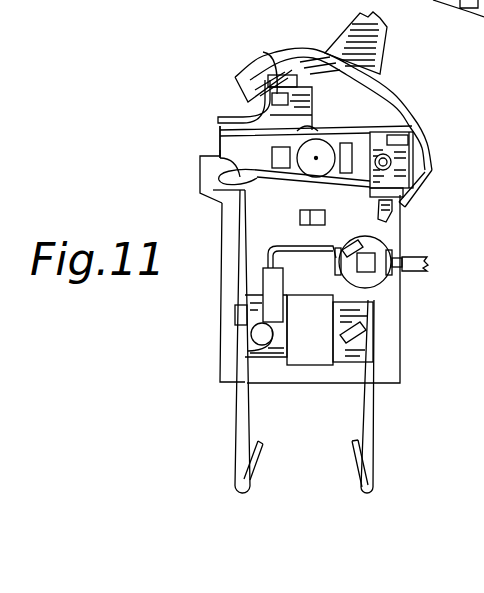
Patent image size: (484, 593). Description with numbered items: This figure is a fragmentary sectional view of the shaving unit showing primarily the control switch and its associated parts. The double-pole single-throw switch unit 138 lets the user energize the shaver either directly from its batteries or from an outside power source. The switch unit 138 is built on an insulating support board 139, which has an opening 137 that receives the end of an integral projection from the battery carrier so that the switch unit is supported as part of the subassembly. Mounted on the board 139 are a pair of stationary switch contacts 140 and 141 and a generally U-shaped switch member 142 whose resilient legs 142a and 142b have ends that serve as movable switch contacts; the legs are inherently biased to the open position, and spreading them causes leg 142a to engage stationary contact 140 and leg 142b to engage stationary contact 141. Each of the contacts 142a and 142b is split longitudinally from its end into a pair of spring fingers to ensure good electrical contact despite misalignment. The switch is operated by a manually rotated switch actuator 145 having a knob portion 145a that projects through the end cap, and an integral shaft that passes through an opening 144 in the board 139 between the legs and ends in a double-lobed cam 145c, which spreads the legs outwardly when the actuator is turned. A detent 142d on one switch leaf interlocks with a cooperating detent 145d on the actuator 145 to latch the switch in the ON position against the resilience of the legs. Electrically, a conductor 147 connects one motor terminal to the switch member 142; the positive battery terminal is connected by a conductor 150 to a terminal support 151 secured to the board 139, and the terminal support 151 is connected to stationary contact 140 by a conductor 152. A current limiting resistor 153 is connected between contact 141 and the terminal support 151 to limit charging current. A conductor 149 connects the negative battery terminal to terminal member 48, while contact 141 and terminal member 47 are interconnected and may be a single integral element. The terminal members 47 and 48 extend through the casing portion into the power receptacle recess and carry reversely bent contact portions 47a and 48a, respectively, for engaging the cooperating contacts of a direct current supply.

The knob portion 145a is at (360, 33).
The conductor 152 is at (379, 212).
The rotary switch actuator 145 is at (388, 82).
The stationary switch contact 140 is at (224, 116).
The detent 142d is at (318, 129).
The U-shaped switch member 142 is at (387, 130).
The detent 145d is at (325, 138).
The leg 142a is at (218, 131).
The leg 142b is at (220, 157).
The opening 144 is at (283, 158).
The double-lobed cam 145c is at (314, 174).
The conductor 147 is at (412, 200).
The switch unit 138 is at (409, 231).
The opening 137 is at (300, 217).
The conductor 150 is at (414, 253).
The terminal support 151 is at (375, 278).
The current limiting resistor 153 is at (272, 290).
The insulating support board 139 is at (389, 343).
The conductor 149 is at (340, 362).
The stationary switch contact 141 is at (221, 205).
The terminal member 47 is at (242, 414).
The reversely bent contact portion 47a is at (266, 460).
The terminal member 48 is at (373, 414).
The reversely bent contact portion 48a is at (351, 445).